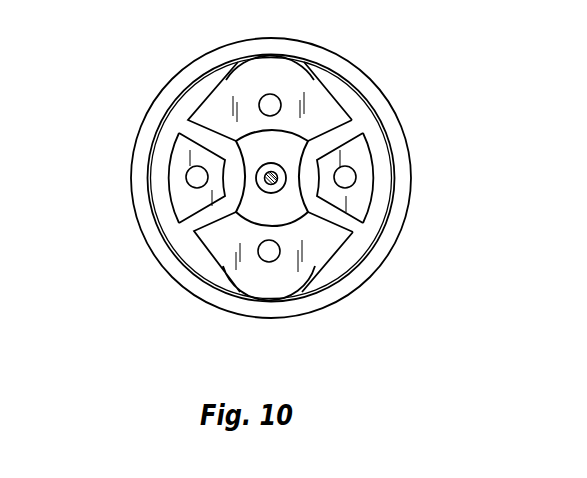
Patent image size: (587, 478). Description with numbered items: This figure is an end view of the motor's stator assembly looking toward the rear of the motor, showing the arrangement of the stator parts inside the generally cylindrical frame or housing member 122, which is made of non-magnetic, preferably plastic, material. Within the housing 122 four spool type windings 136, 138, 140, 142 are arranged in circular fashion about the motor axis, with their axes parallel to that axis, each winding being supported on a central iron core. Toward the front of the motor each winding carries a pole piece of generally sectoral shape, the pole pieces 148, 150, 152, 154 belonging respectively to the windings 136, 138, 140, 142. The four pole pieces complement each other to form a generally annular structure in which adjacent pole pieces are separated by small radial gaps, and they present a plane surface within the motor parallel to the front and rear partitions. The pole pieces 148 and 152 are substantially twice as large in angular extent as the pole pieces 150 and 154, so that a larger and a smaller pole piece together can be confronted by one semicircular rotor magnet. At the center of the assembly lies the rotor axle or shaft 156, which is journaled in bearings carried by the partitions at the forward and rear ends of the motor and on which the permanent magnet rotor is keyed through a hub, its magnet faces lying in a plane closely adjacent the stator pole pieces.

The frame or housing member 122 is at (380, 262).
The spool type winding 136 is at (303, 55).
The spool type winding 138 is at (381, 137).
The spool type winding 140 is at (294, 302).
The spool type winding 142 is at (176, 133).
The pole piece 148 is at (325, 112).
The pole piece 150 is at (352, 203).
The pole piece 152 is at (228, 250).
The pole piece 154 is at (176, 208).
The rotor axle or shaft 156 is at (266, 172).